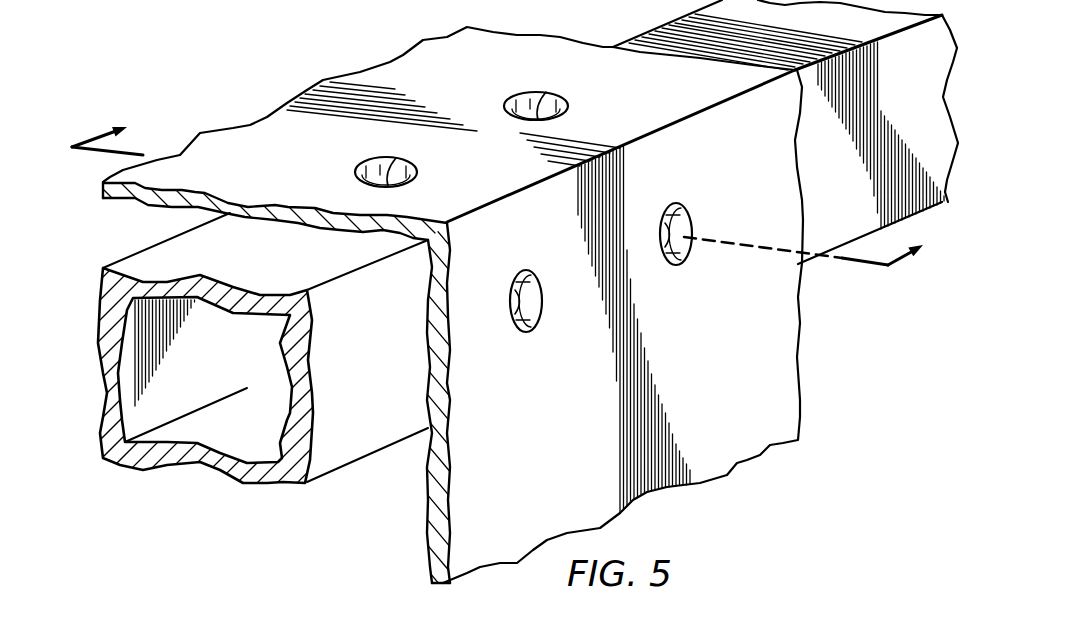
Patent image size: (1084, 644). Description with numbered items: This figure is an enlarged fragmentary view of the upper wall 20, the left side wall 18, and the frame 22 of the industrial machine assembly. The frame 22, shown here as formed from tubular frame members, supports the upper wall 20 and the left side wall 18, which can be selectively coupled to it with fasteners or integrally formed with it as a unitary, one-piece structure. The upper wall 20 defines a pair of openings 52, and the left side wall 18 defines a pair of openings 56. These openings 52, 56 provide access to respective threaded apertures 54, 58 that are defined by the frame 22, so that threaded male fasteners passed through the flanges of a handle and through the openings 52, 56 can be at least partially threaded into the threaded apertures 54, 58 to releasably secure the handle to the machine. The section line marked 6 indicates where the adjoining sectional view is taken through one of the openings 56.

The left side wall 18 is at (745, 469).
The upper wall 20 is at (410, 58).
The frame 22 is at (357, 438).
The openings 52 is at (367, 163).
The threaded apertures 54 is at (394, 163).
The openings 56 is at (542, 290).
The threaded apertures 58 is at (540, 318).
The section line 6- 6 is at (495, 199).